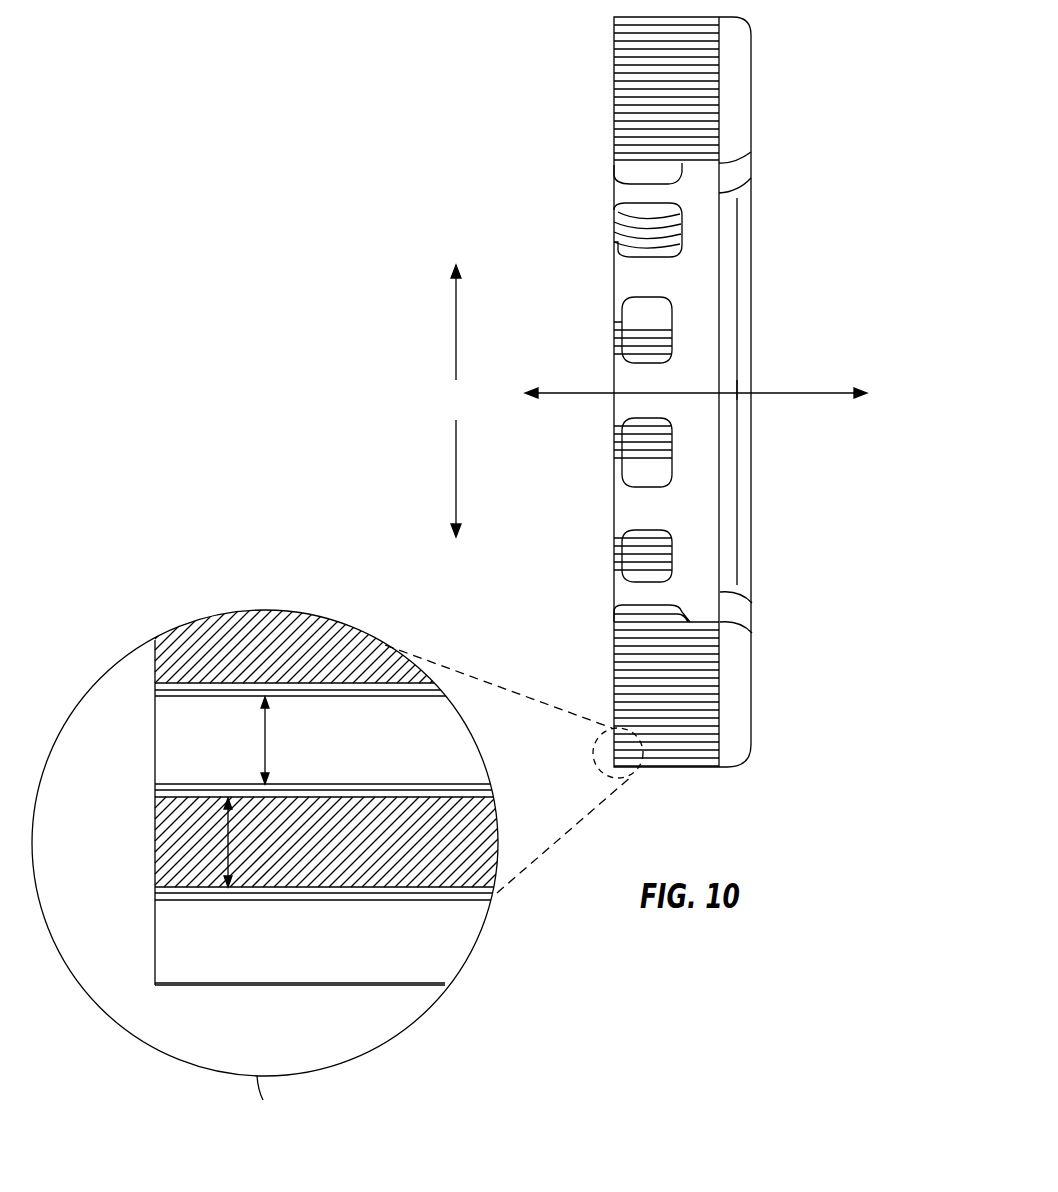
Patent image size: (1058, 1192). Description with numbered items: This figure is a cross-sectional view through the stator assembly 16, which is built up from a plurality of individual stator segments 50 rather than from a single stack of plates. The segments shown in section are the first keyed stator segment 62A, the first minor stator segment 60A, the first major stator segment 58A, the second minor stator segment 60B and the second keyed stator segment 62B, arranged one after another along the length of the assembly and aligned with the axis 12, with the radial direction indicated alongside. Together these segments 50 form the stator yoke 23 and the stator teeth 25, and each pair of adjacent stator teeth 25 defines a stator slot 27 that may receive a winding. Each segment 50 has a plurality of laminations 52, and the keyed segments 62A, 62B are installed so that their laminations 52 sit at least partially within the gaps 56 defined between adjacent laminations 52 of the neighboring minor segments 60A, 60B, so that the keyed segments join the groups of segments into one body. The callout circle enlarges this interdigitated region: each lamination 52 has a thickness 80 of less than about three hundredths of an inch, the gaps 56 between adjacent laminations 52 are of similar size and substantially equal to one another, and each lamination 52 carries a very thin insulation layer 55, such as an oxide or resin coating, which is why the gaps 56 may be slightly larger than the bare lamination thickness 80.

The stator assembly 16 is at (912, 107).
The stator segments 50 is at (517, 492).
The first keyed stator segment 62A is at (752, 31).
The first minor stator segment 60A is at (760, 185).
The first major stator segment 58A is at (760, 348).
The second minor stator segment 60B is at (760, 591).
The second keyed stator segment 62B is at (752, 728).
The axis of rotation 12 is at (818, 395).
The stator yoke 23 is at (795, 560).
The stator teeth 25 is at (614, 510).
The stator slot 27 is at (632, 463).
The laminations 52 is at (462, 754).
The insulation layer 55 is at (378, 688).
The gaps 56 is at (170, 733).
The thickness 80 is at (265, 750).